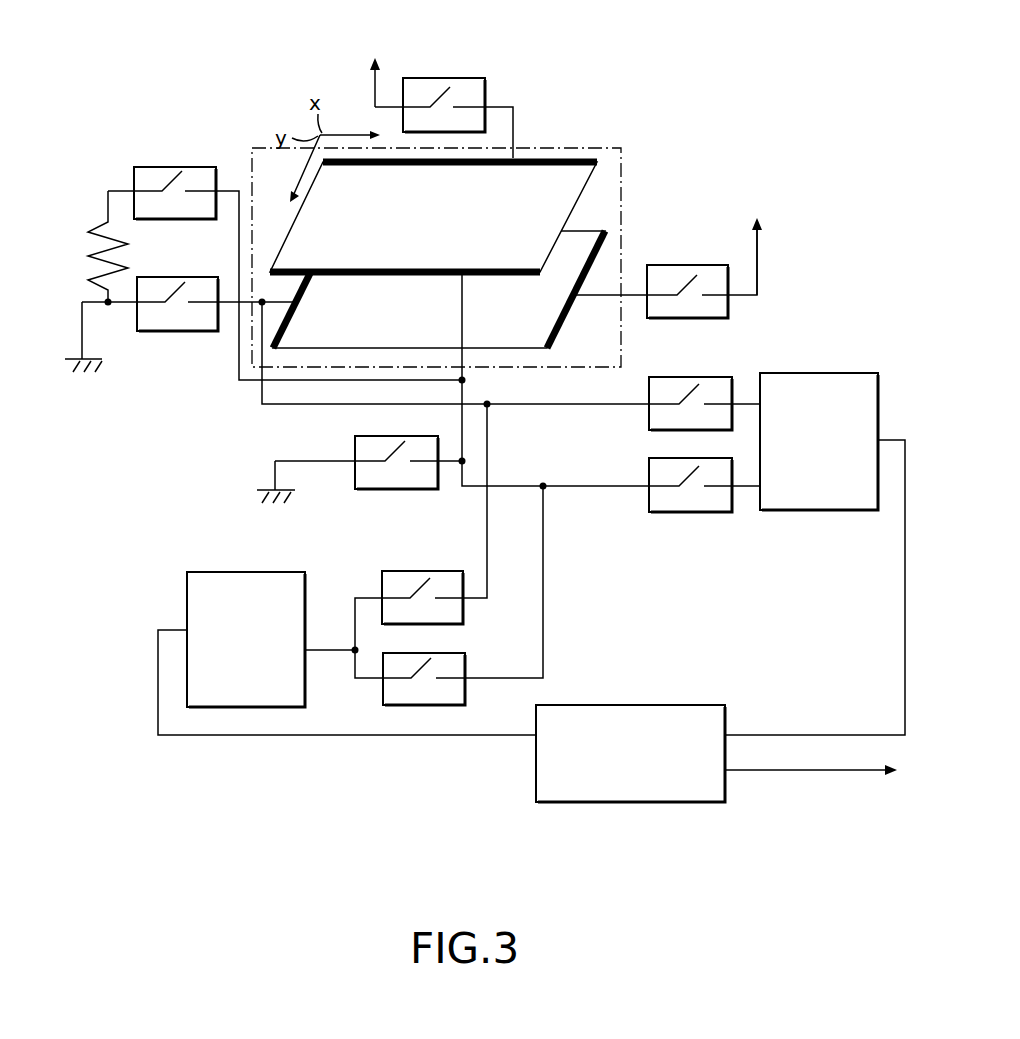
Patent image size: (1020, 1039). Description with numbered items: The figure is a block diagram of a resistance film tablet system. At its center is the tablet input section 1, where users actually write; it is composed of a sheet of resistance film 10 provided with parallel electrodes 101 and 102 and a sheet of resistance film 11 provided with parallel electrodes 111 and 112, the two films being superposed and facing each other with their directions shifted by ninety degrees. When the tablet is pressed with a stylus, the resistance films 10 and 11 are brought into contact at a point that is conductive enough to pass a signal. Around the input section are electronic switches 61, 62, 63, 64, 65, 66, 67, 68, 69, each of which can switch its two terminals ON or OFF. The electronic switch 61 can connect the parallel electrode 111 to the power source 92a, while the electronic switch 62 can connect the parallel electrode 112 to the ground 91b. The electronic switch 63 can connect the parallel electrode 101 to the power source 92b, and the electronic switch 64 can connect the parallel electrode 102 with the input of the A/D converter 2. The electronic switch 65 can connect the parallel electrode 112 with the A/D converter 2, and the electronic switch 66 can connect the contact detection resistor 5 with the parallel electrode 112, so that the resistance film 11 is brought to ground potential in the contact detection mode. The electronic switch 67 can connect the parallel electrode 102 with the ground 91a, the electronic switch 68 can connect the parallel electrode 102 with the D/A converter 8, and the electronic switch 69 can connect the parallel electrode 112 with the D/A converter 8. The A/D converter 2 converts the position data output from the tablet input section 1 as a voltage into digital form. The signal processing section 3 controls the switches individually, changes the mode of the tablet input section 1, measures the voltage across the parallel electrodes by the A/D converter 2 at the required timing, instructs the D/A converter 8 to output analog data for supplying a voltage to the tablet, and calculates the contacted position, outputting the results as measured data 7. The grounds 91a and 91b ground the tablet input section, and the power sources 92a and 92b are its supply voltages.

The tablet input section 1 is at (613, 146).
The resistance film 10 is at (432, 304).
The resistance film 11 is at (421, 192).
The parallel electrode 101 is at (600, 238).
The parallel electrode 102 is at (280, 333).
The parallel electrode 111 is at (555, 156).
The parallel electrode 112 is at (270, 275).
The A/D converter 2 is at (808, 373).
The signal processing section 3 is at (602, 705).
The contact detection resistor 5 is at (90, 238).
The electronic switch 61 is at (487, 88).
The electronic switch 62 is at (400, 489).
The electronic switch 63 is at (708, 265).
The electronic switch 64 is at (720, 377).
The electronic switch 65 is at (710, 512).
The electronic switch 66 is at (200, 167).
The electronic switch 67 is at (147, 331).
The electronic switch 68 is at (448, 571).
The electronic switch 69 is at (465, 663).
The measured data 7 is at (805, 772).
The D/A converter 8 is at (187, 593).
The ground 91a is at (100, 368).
The ground 91b is at (257, 500).
The power source 92a is at (373, 83).
The power source 92b is at (760, 268).